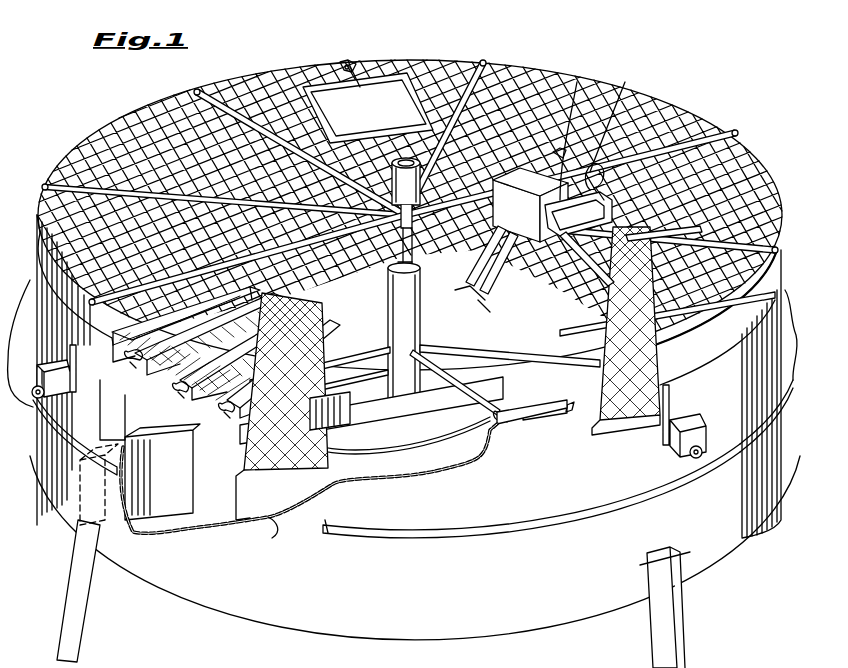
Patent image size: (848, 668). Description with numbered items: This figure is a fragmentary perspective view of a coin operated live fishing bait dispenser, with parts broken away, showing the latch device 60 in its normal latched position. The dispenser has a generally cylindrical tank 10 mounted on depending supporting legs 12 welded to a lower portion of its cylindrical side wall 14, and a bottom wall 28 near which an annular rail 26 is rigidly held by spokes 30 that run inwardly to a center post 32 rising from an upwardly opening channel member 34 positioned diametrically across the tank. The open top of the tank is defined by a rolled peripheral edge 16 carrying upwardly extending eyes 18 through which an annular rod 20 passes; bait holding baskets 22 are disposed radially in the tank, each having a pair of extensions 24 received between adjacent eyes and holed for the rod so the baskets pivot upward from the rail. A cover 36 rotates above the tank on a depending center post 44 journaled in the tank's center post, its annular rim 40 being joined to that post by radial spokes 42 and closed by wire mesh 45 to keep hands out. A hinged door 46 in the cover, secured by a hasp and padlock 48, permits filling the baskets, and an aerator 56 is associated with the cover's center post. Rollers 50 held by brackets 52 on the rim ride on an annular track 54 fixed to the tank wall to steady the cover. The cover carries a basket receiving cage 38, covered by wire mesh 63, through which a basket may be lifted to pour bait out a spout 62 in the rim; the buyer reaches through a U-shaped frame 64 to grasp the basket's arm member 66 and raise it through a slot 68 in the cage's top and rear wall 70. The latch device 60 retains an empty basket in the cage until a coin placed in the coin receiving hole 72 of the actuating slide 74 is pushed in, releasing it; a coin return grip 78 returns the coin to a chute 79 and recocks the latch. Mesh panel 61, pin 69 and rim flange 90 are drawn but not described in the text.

The tank 10 is at (560, 637).
The supporting legs 12 is at (80, 630).
The cylindrical side wall 14 is at (695, 558).
The rolled peripheral edge 16 is at (535, 424).
The eyes 18 is at (128, 362).
The annular rod 20 is at (150, 375).
The bait holding baskets 22 is at (165, 508).
The extensions 24 is at (128, 364).
The annular rail 26 is at (395, 462).
The bottom wall 28 is at (285, 535).
The spokes 30 is at (370, 360).
The center post 32 is at (420, 322).
The channel member 34 is at (371, 410).
The cover 36 is at (525, 65).
The basket receiving cage 38 is at (540, 338).
The annular rim 40 is at (35, 262).
The spokes 42 is at (46, 184).
The center post 44 is at (425, 267).
The wire mesh 45 is at (150, 103).
The hinged door 46 is at (370, 90).
The hasp and padlock 48 is at (342, 58).
The rollers 50 is at (33, 412).
The brackets 52 is at (78, 370).
The annular track 54 is at (60, 440).
The aerator 56 is at (407, 160).
The latch device 60 is at (530, 205).
The mesh panel 61 is at (596, 425).
The spout 62 is at (562, 147).
The wire mesh 63 is at (660, 382).
The frame 64 is at (528, 218).
The arm member 66 is at (604, 175).
The slot 68 is at (579, 128).
The pin 69 is at (462, 288).
The top and rear wall 70 is at (615, 114).
The coin receiving hole 72 is at (578, 209).
The actuating slide 74 is at (587, 244).
The coin return grip 78 is at (640, 238).
The chute 79 is at (479, 314).
The rim flange 90 is at (782, 212).